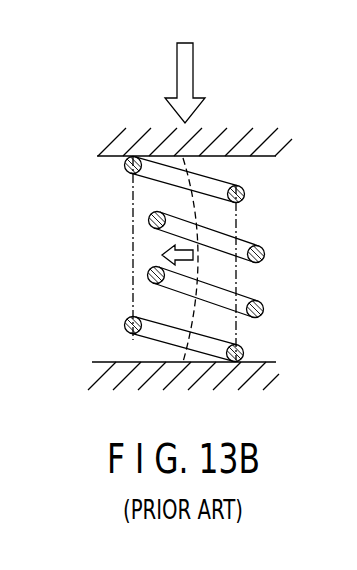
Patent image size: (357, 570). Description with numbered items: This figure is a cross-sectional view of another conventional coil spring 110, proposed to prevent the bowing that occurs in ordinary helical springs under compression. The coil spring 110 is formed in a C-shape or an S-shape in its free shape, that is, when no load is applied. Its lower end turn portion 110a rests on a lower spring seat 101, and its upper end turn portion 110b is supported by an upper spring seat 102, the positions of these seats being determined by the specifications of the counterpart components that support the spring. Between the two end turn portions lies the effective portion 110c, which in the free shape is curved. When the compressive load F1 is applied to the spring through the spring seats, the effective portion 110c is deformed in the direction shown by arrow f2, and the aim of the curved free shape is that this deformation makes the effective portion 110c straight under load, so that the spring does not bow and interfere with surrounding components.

The lower spring seat 101 is at (118, 362).
The upper spring seat 102 is at (257, 157).
The coil spring 110 is at (185, 258).
The lower end turn portion 110a is at (244, 350).
The upper end turn portion 110b is at (124, 166).
The effective portion 110c is at (268, 190).
The compressive load F1 is at (195, 68).
The arrow f2 is at (162, 250).